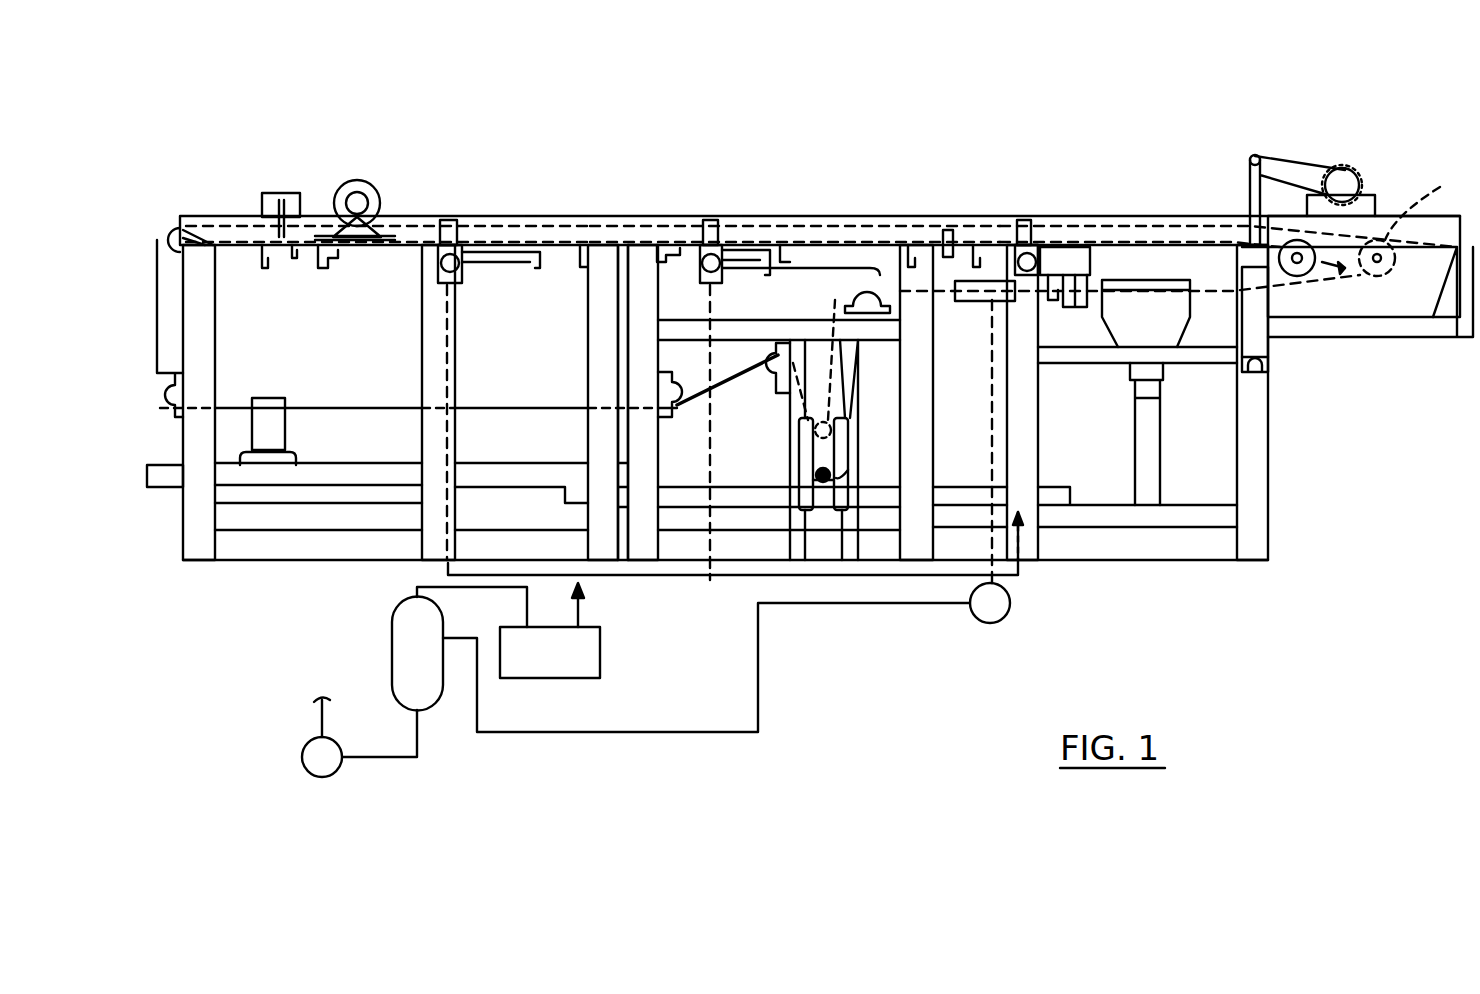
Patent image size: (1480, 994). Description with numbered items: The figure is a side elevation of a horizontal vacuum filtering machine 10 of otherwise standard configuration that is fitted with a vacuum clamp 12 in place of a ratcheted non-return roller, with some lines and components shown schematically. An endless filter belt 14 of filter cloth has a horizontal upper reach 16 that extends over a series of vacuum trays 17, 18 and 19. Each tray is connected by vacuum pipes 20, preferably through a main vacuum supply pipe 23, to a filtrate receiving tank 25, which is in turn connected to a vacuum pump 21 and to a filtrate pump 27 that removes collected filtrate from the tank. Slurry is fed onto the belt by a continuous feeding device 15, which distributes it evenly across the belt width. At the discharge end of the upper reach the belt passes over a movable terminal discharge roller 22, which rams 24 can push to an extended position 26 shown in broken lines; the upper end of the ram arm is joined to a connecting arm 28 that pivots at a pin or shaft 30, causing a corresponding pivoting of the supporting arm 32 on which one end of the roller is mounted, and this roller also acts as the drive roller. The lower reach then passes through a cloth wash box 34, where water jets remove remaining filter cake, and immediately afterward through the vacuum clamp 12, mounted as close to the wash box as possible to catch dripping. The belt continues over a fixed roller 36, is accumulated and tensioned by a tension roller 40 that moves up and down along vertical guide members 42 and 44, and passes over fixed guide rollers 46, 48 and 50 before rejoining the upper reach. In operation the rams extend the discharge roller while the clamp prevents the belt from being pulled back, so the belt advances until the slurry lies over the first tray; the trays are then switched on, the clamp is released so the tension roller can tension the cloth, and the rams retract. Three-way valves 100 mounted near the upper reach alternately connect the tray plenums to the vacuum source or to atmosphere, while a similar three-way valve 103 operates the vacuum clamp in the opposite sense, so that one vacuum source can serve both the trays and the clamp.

The horizontal vacuum filtering machine 10 is at (810, 399).
The vacuum clamp 12 is at (972, 301).
The filter belt 14 is at (362, 407).
The continuous feeding device 15 is at (358, 180).
The upper reach 16 is at (566, 222).
The vacuum tray 17 is at (488, 228).
The vacuum tray 18 is at (820, 232).
The vacuum tray 19 is at (1133, 232).
The vacuum pipes 20 is at (460, 274).
The vacuum pump 21 is at (600, 666).
The terminal discharge roller 22 is at (1306, 276).
The main vacuum supply pipe 23 is at (710, 580).
The rams 24 is at (1270, 340).
The filtrate receiving tank 25 is at (392, 627).
The extended position 26 is at (1443, 185).
The filtrate pump 27 is at (305, 750).
The connecting arm 28 is at (1296, 168).
The pin or shaft 30 is at (1352, 188).
The supporting arm 32 is at (1362, 270).
The cloth wash box 34 is at (1175, 332).
The fixed roller 36 is at (852, 297).
The tension roller 40 is at (840, 470).
The vertical guide member 42 is at (816, 472).
The vertical guide member 44 is at (842, 432).
The fixed guide roller 46 is at (770, 388).
The fixed guide roller 48 is at (678, 392).
The fixed guide roller 50 is at (178, 408).
The three-way valve 100 is at (446, 220).
The three-way valve 103 is at (1010, 603).